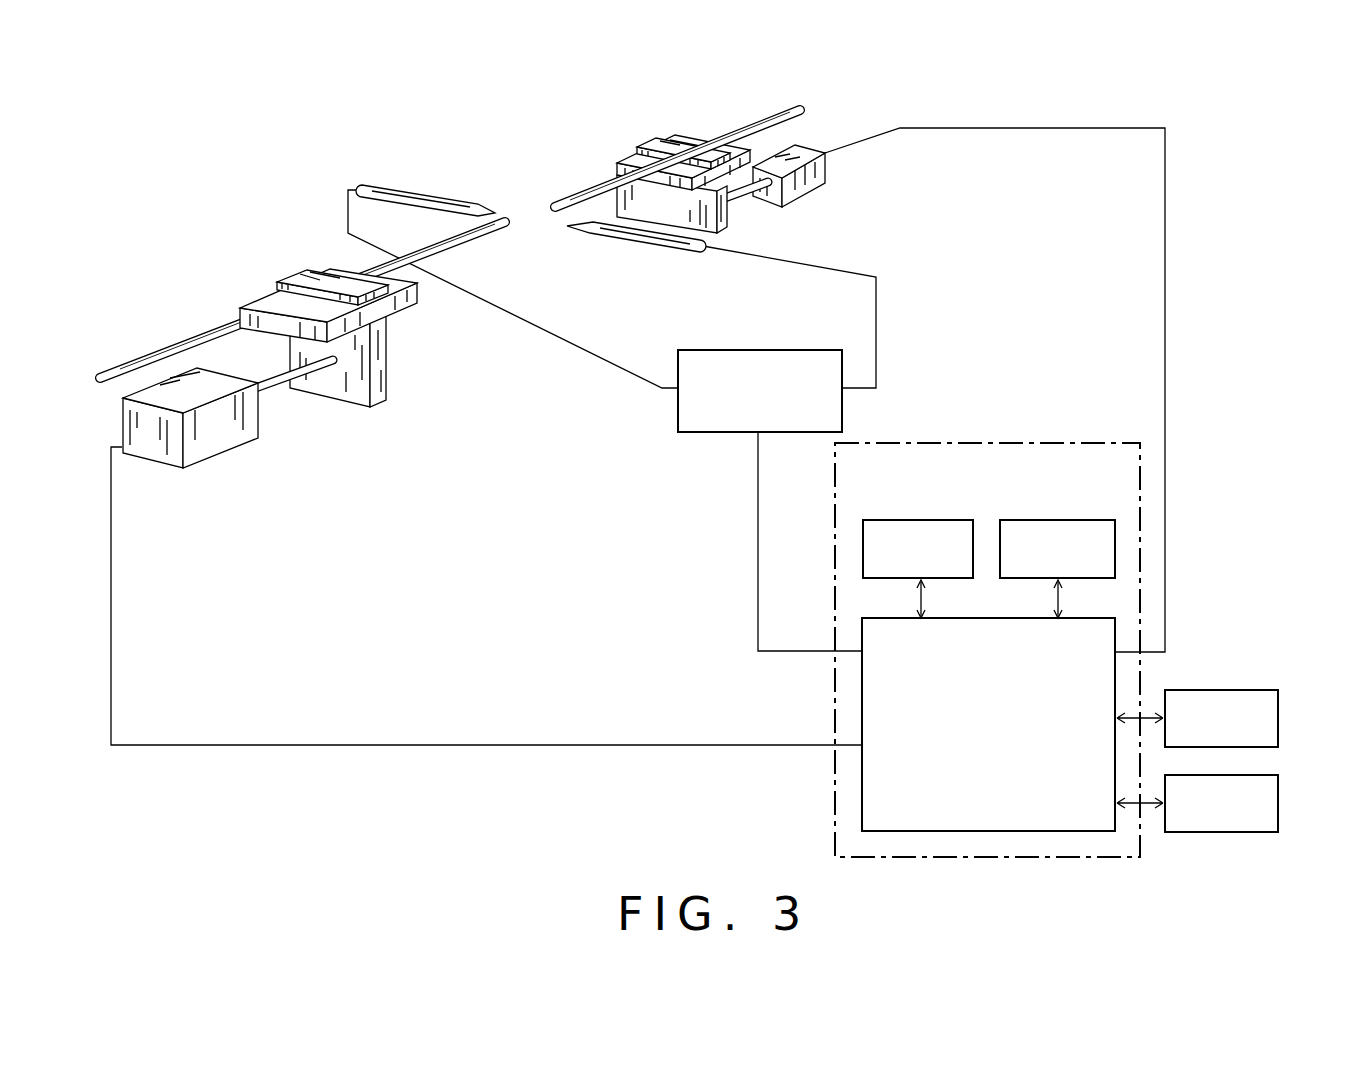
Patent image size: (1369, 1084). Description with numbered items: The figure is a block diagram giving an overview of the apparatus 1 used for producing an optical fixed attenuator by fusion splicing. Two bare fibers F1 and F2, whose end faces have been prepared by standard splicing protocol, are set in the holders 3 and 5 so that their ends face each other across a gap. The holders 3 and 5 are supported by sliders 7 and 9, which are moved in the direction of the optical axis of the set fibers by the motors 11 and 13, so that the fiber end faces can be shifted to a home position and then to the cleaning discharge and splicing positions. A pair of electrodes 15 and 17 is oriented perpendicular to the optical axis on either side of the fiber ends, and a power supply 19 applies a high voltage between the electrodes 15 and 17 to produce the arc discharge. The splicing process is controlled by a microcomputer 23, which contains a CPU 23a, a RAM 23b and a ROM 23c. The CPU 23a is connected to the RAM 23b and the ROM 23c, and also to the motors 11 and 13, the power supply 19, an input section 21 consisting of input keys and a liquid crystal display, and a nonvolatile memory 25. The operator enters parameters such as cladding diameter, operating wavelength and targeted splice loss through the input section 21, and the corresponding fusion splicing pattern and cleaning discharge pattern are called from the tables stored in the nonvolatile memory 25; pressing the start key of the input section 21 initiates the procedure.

The apparatus 1 is at (547, 177).
The holder 3 is at (290, 277).
The holder 5 is at (690, 142).
The slider 7 is at (348, 390).
The slider 9 is at (728, 222).
The motor 11 is at (210, 447).
The motor 13 is at (818, 180).
The electrode 15 is at (415, 193).
The electrode 17 is at (637, 243).
The power supply 19 is at (768, 349).
The input section 21 is at (1210, 690).
The microcomputer 23 is at (1012, 443).
The CPU 23a is at (940, 618).
The RAM 23b is at (877, 520).
The ROM 23c is at (1027, 520).
The nonvolatile memory (NVM) 25 is at (1225, 775).
The bare fiber F1 is at (172, 343).
The bare fiber F2 is at (770, 112).